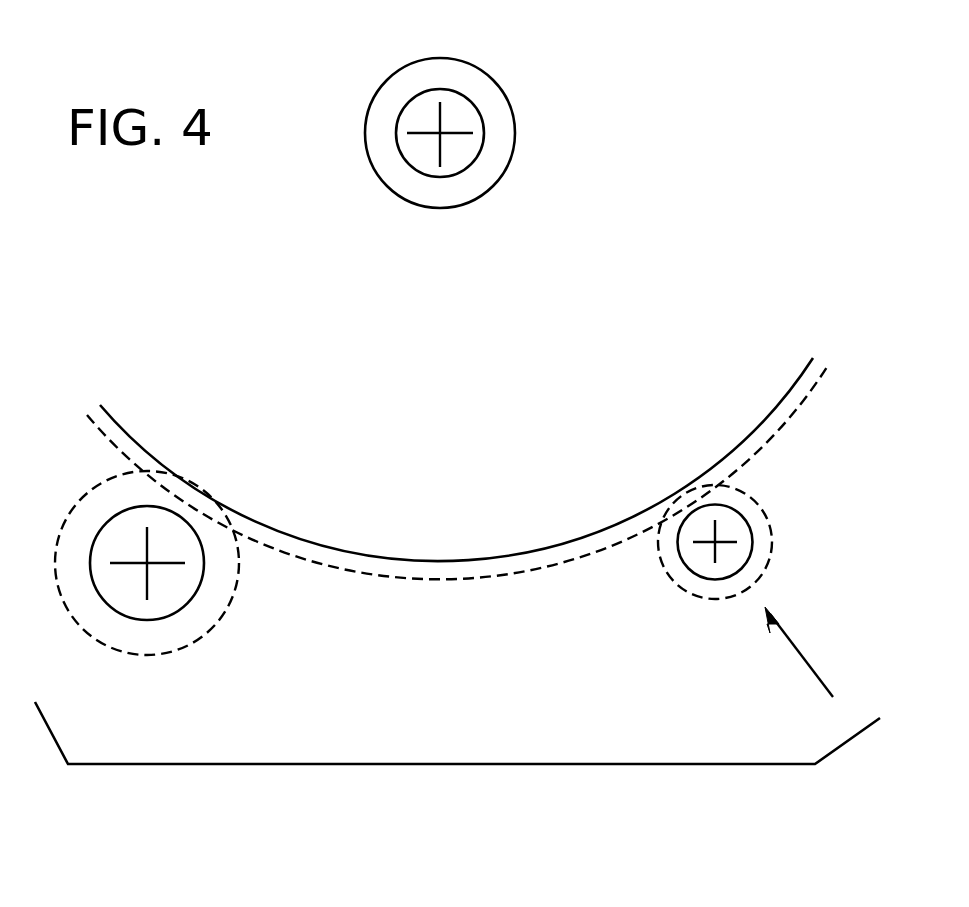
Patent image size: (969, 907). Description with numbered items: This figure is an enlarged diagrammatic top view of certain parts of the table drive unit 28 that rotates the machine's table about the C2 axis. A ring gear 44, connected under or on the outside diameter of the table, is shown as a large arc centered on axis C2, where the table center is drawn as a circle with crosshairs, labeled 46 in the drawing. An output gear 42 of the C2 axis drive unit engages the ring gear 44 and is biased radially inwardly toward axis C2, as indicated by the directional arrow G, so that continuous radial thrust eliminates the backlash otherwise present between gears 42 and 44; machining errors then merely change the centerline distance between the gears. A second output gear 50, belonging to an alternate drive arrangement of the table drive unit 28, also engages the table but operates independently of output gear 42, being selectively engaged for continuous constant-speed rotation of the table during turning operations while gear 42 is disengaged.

The roller 46 is at (497, 85).
The C2 axis C2 is at (453, 133).
The ring gear 44 is at (740, 443).
The output gear 42 is at (772, 540).
The output gear 50 is at (227, 608).
The table drive unit 28 is at (408, 765).
The directional arrow G is at (799, 665).